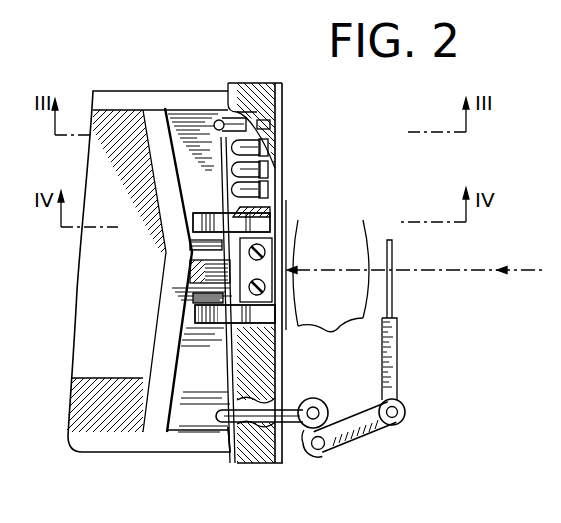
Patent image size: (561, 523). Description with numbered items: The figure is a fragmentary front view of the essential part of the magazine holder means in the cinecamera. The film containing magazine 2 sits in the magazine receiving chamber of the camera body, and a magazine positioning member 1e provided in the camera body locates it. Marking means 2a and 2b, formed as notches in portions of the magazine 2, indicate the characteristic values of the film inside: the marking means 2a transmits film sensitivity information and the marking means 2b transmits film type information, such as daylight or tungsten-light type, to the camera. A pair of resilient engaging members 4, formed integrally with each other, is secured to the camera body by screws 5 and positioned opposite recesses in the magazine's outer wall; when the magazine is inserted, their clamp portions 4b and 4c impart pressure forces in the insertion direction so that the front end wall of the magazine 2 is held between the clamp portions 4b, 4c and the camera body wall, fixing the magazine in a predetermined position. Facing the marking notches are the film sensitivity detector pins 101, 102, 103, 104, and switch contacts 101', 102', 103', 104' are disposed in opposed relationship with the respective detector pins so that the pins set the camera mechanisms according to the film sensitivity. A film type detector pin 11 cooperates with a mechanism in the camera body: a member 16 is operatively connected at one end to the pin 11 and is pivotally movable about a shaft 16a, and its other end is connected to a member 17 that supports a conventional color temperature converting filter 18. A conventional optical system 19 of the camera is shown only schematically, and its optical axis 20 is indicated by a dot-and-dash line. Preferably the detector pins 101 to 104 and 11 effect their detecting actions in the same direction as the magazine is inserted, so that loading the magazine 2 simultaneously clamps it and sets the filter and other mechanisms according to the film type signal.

The film containing magazine 2 is at (105, 322).
The marking means 2a is at (228, 113).
The marking means 2b is at (229, 428).
The resilient engaging members 4 is at (258, 213).
The clamp portion 4b is at (200, 220).
The clamp portion 4c is at (218, 322).
The screws 5 is at (192, 243).
The magazine positioning member 1e is at (190, 272).
The film type detector pin 11 is at (258, 422).
The member 16 is at (360, 426).
The shaft 16a is at (322, 449).
The member 17 is at (397, 343).
The color temperature converting filter 18 is at (392, 295).
The optical system 19 is at (331, 284).
The optical axis 20 is at (457, 267).
The film sensitivity detector pin 101 is at (205, 99).
The switch contact 101' is at (287, 113).
The film sensitivity detector pin 102 is at (277, 157).
The switch contact 102' is at (292, 139).
The film sensitivity detector pin 103 is at (277, 182).
The switch contact 103' is at (312, 171).
The film sensitivity detector pin 104 is at (220, 177).
The switch contact 104' is at (310, 201).